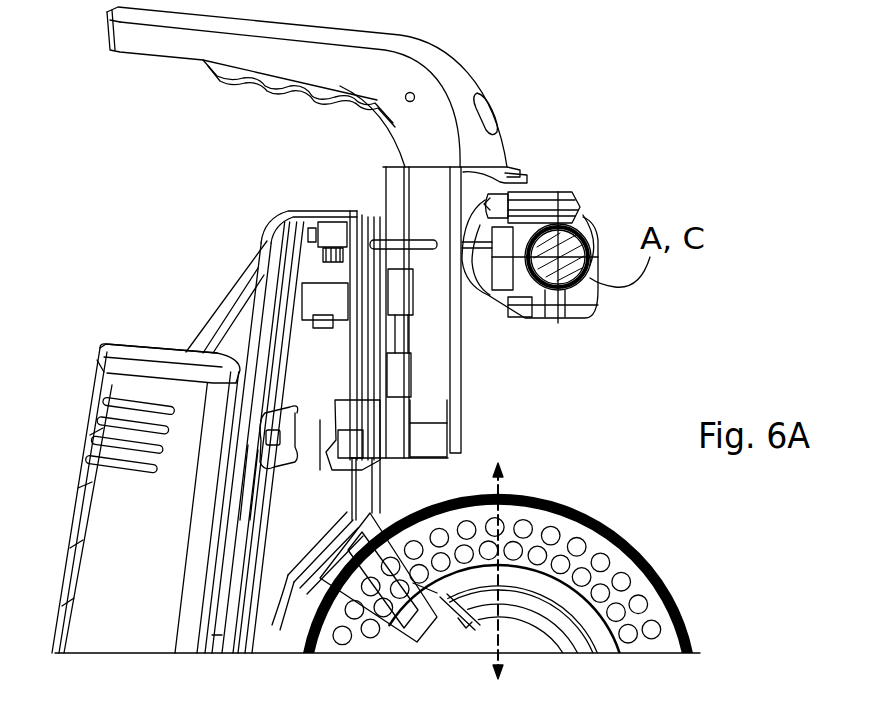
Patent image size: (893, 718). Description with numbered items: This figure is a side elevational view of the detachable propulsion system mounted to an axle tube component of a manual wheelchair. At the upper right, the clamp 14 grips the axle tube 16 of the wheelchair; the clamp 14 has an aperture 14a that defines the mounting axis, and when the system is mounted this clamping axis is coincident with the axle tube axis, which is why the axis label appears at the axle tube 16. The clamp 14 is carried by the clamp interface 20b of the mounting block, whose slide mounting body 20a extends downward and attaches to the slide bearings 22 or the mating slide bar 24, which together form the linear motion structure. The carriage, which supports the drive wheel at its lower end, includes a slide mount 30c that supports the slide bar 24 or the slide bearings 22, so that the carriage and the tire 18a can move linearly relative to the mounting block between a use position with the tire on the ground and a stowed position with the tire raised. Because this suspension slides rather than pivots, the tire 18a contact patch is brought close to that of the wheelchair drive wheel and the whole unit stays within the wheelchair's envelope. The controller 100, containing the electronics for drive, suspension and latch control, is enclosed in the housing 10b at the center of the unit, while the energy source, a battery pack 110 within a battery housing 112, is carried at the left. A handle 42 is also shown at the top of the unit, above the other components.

The handle 42 is at (178, 108).
The battery pack 110 is at (142, 327).
The battery housing 112 is at (168, 343).
The housing 10b is at (259, 247).
The controller 100 is at (313, 279).
The slide mount 30c is at (380, 258).
The slide bearing 22 is at (398, 372).
The slide bar 24 is at (407, 421).
The clamp interface 20b is at (502, 180).
The clamp 14 is at (631, 188).
The aperture 14a is at (580, 222).
The axle tube 16 is at (567, 273).
The slide mounting body 20a is at (443, 443).
The tire 18a is at (680, 603).